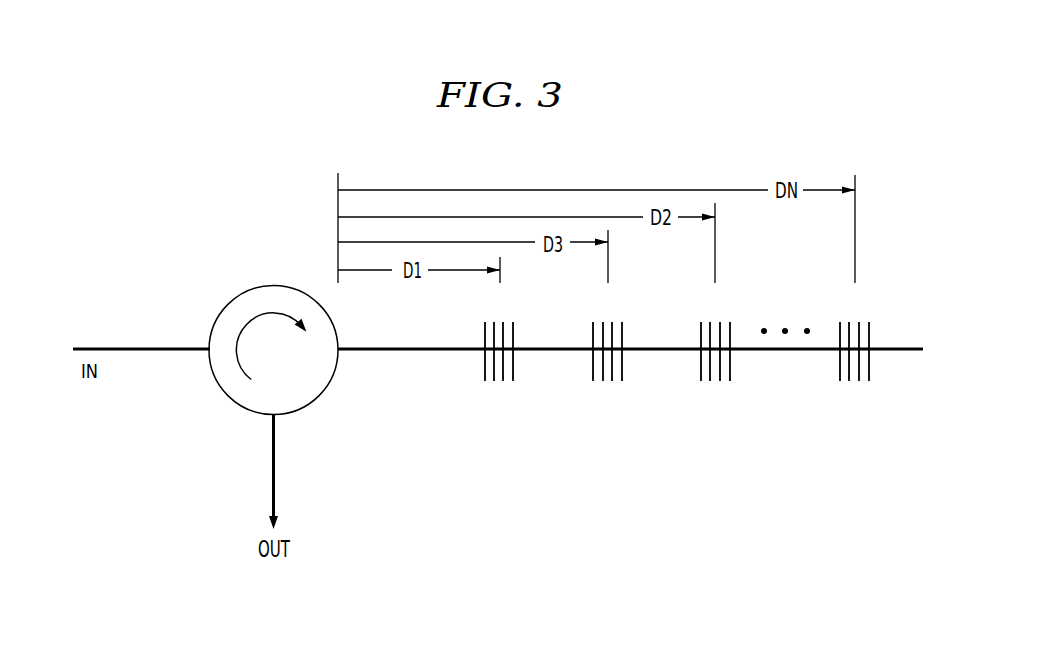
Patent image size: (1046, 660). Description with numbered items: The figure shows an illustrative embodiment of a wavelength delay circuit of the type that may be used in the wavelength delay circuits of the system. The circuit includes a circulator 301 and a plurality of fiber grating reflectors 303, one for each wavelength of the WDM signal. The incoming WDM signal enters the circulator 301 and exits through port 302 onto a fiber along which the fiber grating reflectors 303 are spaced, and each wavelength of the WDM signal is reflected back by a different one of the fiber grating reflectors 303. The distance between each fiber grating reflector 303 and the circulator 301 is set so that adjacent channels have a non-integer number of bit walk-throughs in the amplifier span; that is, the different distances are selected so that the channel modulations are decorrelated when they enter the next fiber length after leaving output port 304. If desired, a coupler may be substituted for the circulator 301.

The circulator 301 is at (227, 395).
The port 302 is at (340, 353).
The fiber grating reflectors 303 is at (883, 424).
The output port 304 is at (275, 415).